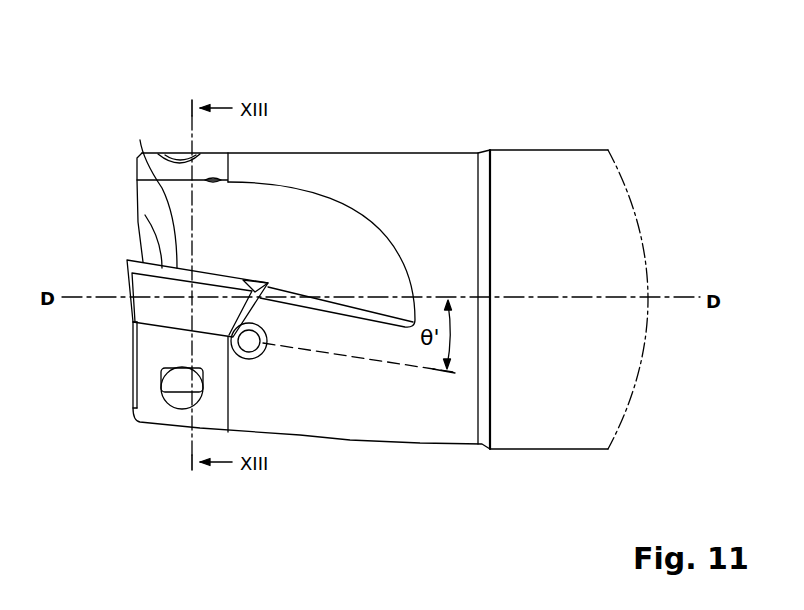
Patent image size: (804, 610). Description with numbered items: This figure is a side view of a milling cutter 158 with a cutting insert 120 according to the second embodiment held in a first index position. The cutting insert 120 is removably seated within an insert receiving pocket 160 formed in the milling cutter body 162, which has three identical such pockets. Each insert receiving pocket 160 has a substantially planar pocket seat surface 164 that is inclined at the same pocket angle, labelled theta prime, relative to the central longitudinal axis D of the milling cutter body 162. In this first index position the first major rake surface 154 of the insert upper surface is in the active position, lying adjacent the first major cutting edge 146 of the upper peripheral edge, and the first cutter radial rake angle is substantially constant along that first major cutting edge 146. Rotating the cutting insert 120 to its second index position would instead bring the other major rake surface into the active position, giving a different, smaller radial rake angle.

The cutting insert 120 is at (162, 310).
The first major cutting edge 146 is at (140, 140).
The first major rake surface 154 is at (145, 215).
The milling cutter 158 is at (437, 137).
The insert receiving pocket 160 is at (264, 316).
The milling cutter body 162 is at (415, 392).
The pocket seat surface 164 is at (143, 327).